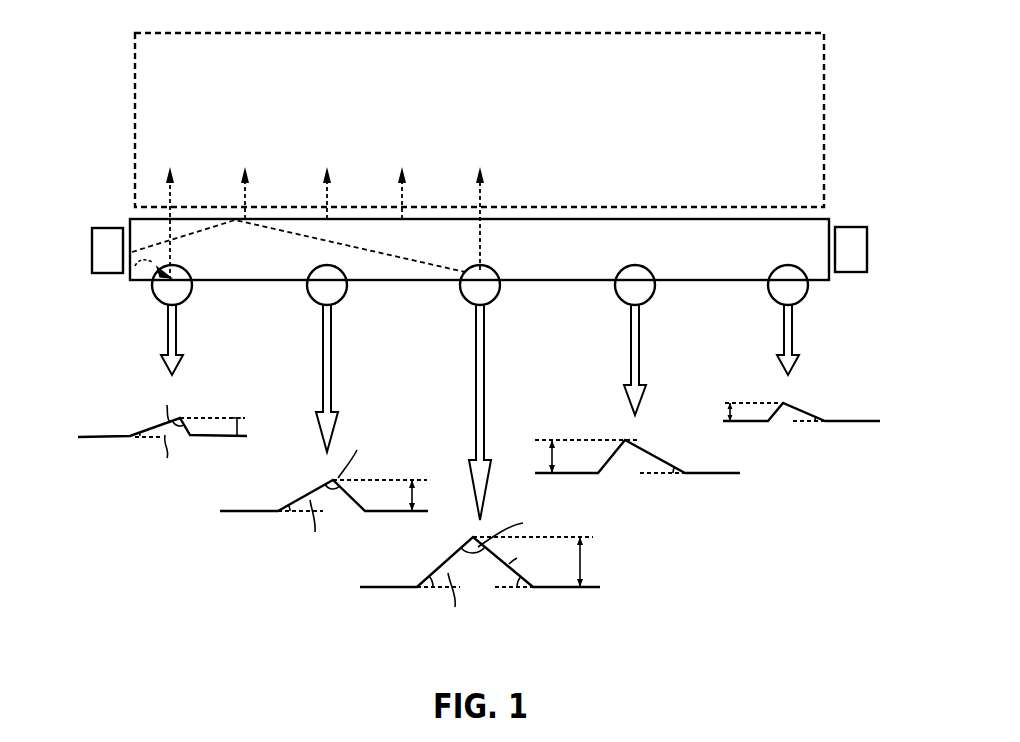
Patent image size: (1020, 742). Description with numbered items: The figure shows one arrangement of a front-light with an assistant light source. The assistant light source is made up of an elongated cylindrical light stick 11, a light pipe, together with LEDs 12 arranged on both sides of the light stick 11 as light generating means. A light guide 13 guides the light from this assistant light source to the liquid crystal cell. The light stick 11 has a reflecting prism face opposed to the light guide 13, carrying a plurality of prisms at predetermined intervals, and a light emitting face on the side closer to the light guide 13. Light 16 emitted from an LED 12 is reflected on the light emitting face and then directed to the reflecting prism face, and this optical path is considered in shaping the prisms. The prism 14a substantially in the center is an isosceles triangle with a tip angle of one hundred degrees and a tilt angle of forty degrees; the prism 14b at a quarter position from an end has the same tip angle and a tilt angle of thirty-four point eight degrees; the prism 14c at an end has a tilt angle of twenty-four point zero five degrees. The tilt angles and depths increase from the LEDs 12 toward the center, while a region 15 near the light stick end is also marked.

The light stick 11 is at (812, 265).
The LED 12 is at (93, 251).
The light guide 13 is at (790, 116).
The prism 14a is at (548, 588).
The prism 14b is at (357, 490).
The prism 14c is at (192, 423).
The light incidence surface 15 is at (137, 283).
The light 16 is at (192, 232).